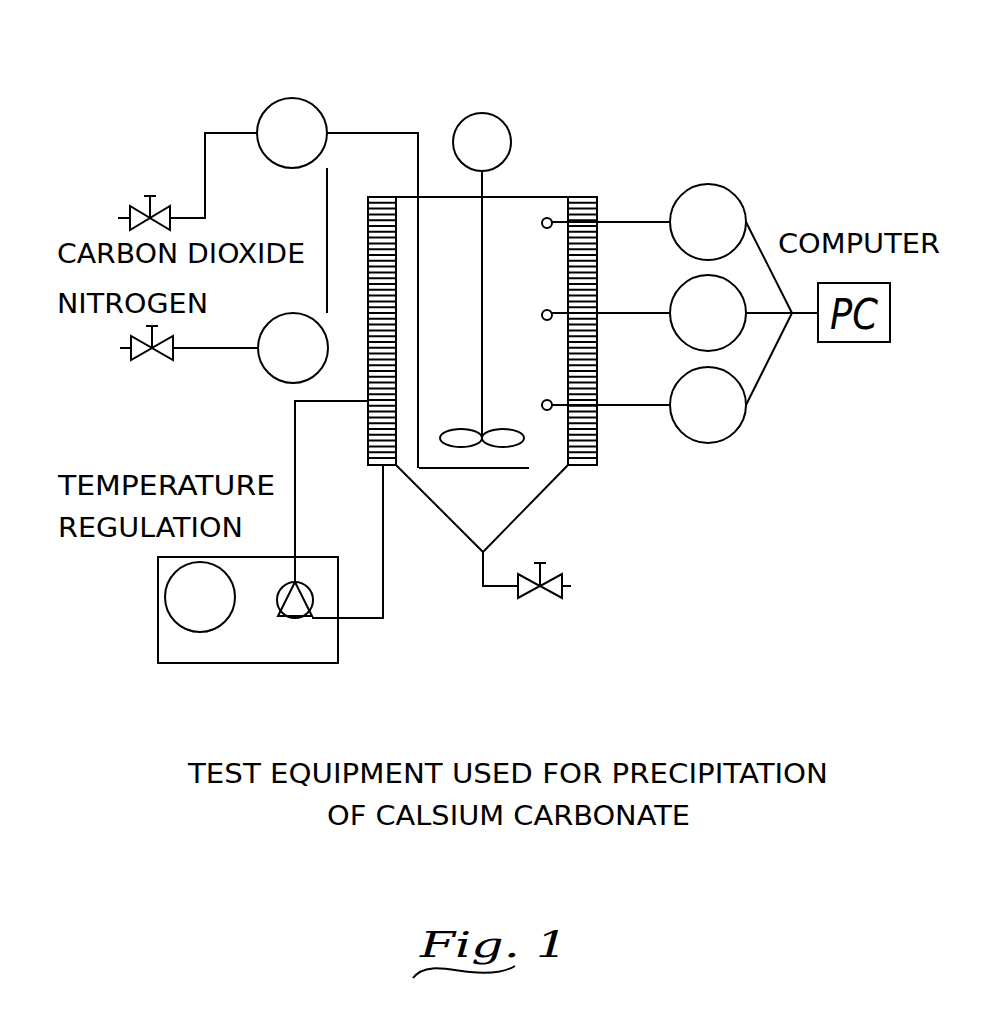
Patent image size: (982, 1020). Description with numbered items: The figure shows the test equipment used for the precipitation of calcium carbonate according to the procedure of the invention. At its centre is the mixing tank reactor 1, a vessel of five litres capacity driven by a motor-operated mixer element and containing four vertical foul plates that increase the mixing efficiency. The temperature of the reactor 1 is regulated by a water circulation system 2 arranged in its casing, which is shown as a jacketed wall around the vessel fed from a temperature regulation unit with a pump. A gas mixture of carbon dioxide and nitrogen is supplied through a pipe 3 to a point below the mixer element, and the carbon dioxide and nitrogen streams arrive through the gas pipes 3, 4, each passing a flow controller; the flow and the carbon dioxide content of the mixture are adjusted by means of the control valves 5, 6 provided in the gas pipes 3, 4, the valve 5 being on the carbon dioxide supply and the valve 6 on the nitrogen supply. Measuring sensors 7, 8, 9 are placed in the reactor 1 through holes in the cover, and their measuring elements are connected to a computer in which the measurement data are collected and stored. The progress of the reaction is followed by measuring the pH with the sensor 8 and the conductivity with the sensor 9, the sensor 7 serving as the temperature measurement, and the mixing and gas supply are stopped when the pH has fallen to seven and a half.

The mixing tank reactor 1 is at (513, 200).
The water circulation system 2 is at (372, 622).
The gas pipe 3 is at (225, 133).
The gas pipe 4 is at (327, 205).
The control valve 5 is at (142, 212).
The control valve 6 is at (140, 357).
The measuring sensor 7 is at (633, 222).
The pH measuring sensor 8 is at (631, 313).
The conductivity measuring sensor 9 is at (632, 405).